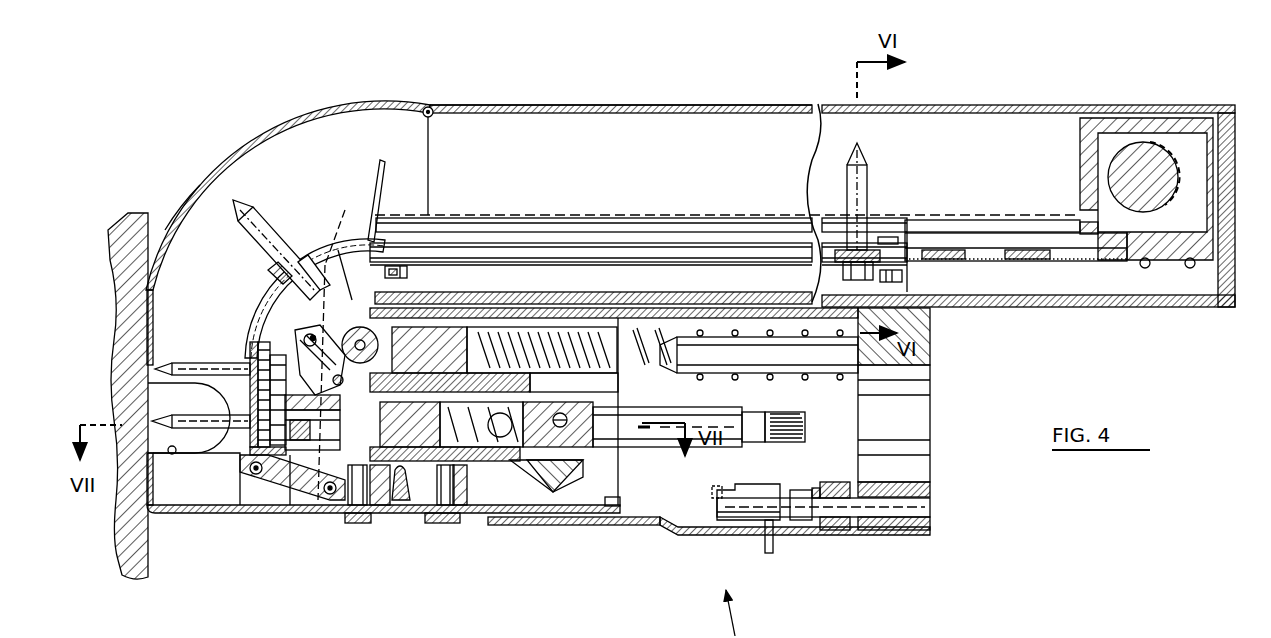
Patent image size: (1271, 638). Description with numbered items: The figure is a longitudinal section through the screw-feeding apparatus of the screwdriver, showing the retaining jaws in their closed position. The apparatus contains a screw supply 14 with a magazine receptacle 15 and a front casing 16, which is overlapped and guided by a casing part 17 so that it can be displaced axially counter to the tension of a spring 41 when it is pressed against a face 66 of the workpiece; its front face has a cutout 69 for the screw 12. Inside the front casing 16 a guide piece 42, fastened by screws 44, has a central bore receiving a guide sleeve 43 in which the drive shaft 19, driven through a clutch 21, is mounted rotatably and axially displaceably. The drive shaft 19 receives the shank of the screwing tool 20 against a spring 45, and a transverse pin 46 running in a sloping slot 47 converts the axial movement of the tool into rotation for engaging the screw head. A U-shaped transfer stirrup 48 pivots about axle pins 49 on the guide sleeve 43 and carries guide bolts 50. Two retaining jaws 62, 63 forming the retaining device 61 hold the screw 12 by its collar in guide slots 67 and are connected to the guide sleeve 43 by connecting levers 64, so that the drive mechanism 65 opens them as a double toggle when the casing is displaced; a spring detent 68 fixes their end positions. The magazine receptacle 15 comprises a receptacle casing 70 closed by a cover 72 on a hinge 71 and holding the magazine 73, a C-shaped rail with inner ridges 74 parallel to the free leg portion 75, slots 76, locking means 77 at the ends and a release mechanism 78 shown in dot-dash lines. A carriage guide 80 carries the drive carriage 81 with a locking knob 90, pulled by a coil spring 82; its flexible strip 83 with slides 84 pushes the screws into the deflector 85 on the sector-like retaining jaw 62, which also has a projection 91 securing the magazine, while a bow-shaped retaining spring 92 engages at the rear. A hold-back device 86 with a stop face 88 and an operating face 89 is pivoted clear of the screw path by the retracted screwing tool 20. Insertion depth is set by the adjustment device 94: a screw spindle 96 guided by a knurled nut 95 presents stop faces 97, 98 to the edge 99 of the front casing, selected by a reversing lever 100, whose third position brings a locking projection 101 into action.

The self-tapping screw 12 is at (860, 200).
The screw supply 14 is at (333, 245).
The magazine receptacle 15 is at (1000, 140).
The front casing 16 is at (158, 512).
The casing part 17 is at (672, 535).
The drive shaft 19 is at (640, 448).
The screwing tool 20 is at (286, 510).
The clutch 21 is at (847, 419).
The spring 41 is at (652, 366).
The guide piece 42 is at (392, 515).
The guide sleeve 43 is at (492, 461).
The screws 44 is at (352, 520).
The spring 45 is at (462, 520).
The transverse pin 46 is at (372, 523).
The sloping slot 47 is at (406, 515).
The transfer stirrup 48 is at (555, 526).
The axle pins 49 is at (540, 410).
The guide bolt 50 is at (593, 415).
The retaining device 61 is at (226, 350).
The retaining jaw 62 is at (264, 300).
The retaining jaw 63 is at (256, 510).
The connecting lever 64 is at (318, 527).
The drive mechanism 65 is at (515, 545).
The face 66 is at (148, 220).
The guide slots 67 is at (250, 392).
The spring detent 68 is at (441, 515).
The cutout 69 is at (172, 455).
The receptacle casing 70 is at (1090, 307).
The hinge 71 is at (430, 105).
The cover 72 is at (505, 103).
The magazine 73 is at (703, 268).
The inner ridges 74 is at (650, 265).
The free leg portion 75 is at (590, 262).
The slots 76 is at (530, 258).
The locking means 77 is at (410, 273).
The release mechanism 78 is at (392, 240).
The carriage guide 80 is at (935, 225).
The drive carriage 81 is at (1180, 118).
The coil spring 82 is at (1015, 215).
The strip 83 is at (1088, 263).
The slides 84 is at (1005, 262).
The deflector 85 is at (320, 256).
The hold-back device 86 is at (380, 346).
The stop face 88 is at (285, 332).
The operating face 89 is at (250, 449).
The locking knob 90 is at (1105, 118).
The projection 91 is at (368, 232).
The retaining spring 92 is at (890, 237).
The adjustment device 94 is at (843, 570).
The knurled nut 95 is at (830, 530).
The screw spindle 96 is at (882, 520).
The stop face 97 is at (712, 530).
The stop face 98 is at (740, 488).
The edge 99 is at (622, 502).
The reversing lever 100 is at (768, 553).
The locking projection 101 is at (716, 486).